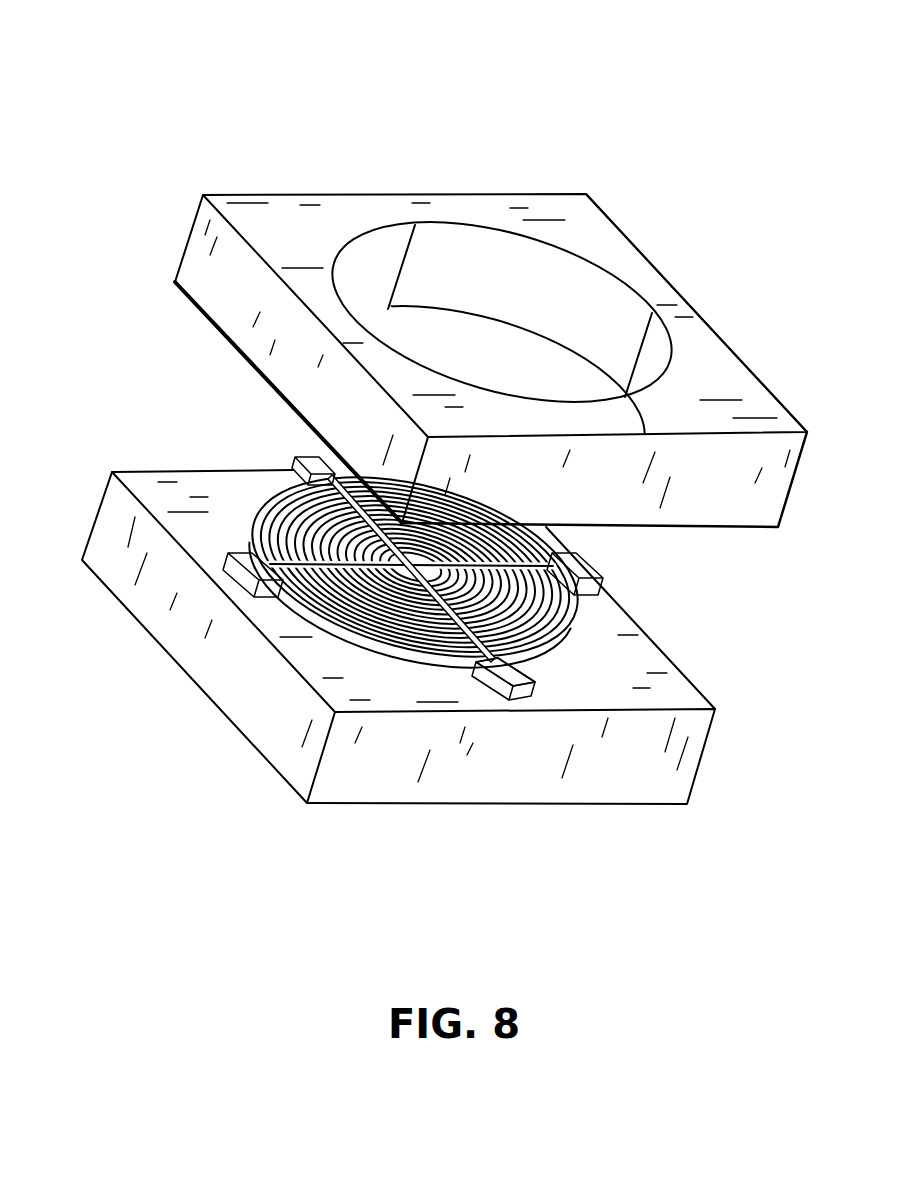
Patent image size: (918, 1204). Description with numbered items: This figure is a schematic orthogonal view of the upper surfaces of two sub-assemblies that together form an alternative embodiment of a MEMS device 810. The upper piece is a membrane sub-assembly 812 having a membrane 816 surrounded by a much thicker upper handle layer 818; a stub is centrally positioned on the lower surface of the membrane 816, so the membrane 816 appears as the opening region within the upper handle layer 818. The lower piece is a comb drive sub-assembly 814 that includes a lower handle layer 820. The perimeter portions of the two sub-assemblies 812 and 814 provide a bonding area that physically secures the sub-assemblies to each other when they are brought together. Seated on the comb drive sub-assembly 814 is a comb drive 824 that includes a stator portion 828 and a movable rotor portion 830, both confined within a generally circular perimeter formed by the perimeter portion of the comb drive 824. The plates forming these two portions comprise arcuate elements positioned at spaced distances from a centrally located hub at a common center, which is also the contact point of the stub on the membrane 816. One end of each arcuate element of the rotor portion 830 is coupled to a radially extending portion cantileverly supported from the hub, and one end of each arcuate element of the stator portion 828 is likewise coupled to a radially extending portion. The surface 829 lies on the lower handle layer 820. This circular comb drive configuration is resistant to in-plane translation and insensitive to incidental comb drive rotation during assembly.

The MEMS device 810 is at (588, 146).
The membrane sub-assembly 812 is at (187, 240).
The comb drive sub-assembly 814 is at (110, 522).
The membrane 816 is at (488, 360).
The upper handle layer 818 is at (730, 345).
The lower handle layer 820 is at (625, 777).
The comb drive 824 is at (540, 625).
The stator portion 828 is at (528, 700).
The lower core half side surface 829 is at (390, 783).
The rotor portion 830 is at (500, 700).